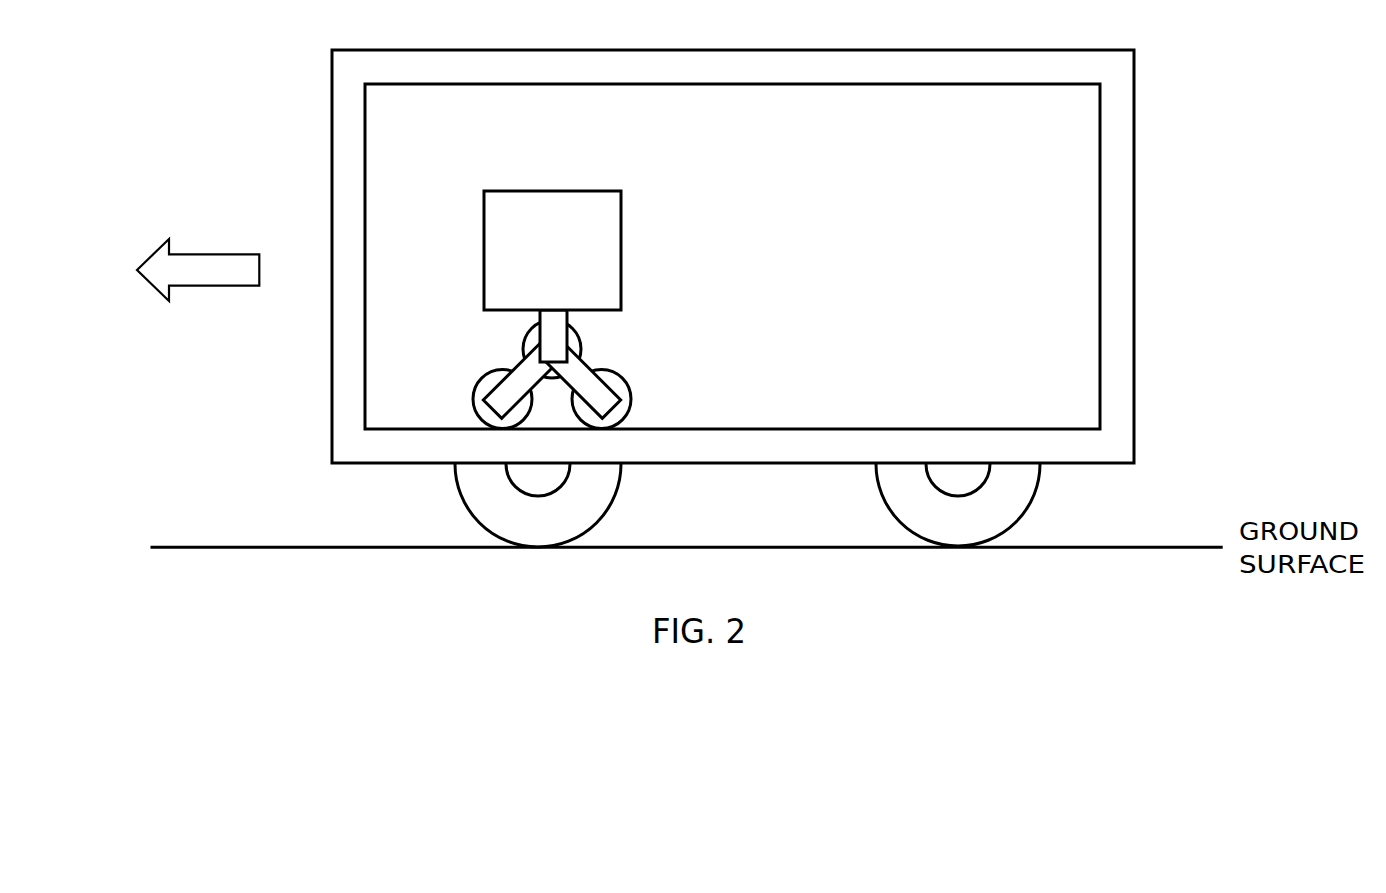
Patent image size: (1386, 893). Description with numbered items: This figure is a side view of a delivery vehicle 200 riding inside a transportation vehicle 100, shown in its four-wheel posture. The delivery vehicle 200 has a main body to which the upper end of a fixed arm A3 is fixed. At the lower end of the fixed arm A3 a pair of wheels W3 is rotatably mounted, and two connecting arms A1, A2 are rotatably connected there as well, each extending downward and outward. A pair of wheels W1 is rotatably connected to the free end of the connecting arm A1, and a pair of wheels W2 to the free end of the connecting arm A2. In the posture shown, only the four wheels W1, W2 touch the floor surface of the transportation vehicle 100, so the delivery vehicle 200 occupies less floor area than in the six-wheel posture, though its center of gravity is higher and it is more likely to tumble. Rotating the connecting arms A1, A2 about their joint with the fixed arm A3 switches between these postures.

The transportation vehicle 100 is at (1136, 195).
The delivery vehicle 200 is at (621, 210).
The connecting arm A1 is at (497, 395).
The connecting arm A2 is at (605, 390).
The fixed arm A3 is at (562, 318).
The wheels W1 is at (475, 397).
The wheels W2 is at (633, 399).
The wheels W3 is at (526, 343).